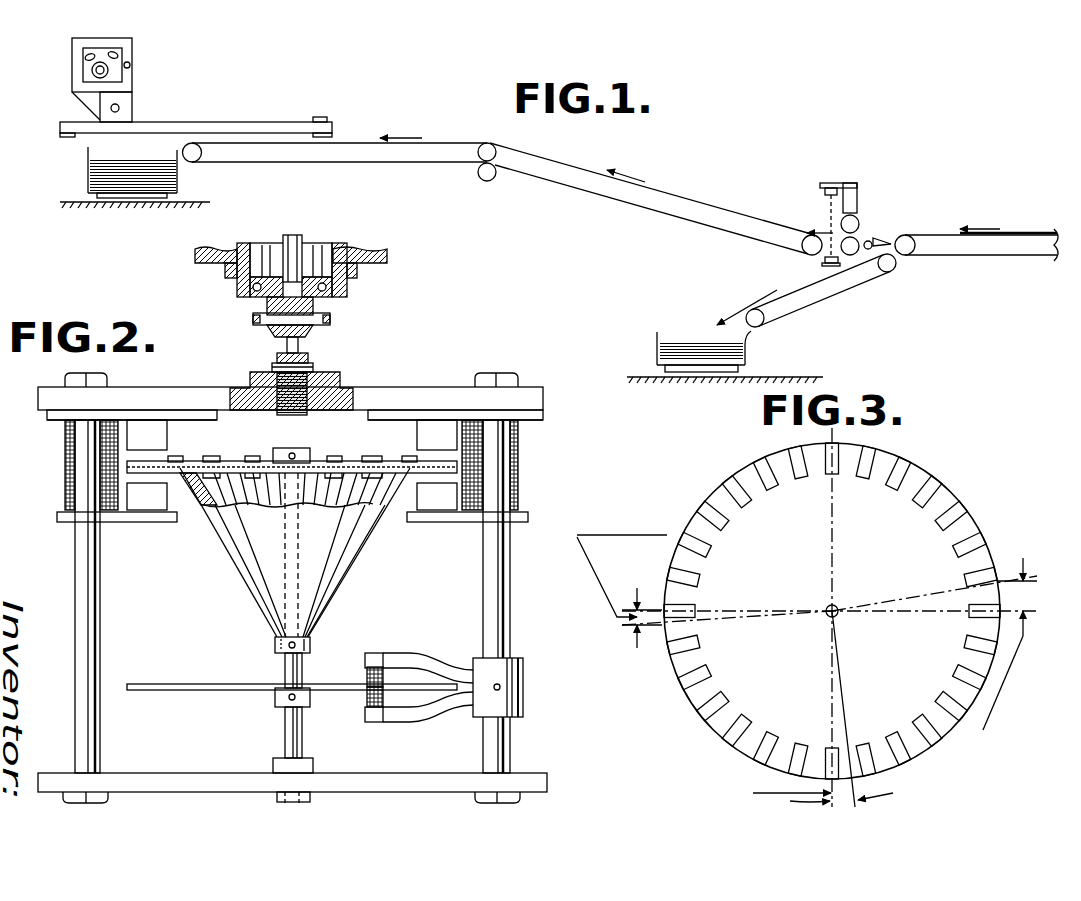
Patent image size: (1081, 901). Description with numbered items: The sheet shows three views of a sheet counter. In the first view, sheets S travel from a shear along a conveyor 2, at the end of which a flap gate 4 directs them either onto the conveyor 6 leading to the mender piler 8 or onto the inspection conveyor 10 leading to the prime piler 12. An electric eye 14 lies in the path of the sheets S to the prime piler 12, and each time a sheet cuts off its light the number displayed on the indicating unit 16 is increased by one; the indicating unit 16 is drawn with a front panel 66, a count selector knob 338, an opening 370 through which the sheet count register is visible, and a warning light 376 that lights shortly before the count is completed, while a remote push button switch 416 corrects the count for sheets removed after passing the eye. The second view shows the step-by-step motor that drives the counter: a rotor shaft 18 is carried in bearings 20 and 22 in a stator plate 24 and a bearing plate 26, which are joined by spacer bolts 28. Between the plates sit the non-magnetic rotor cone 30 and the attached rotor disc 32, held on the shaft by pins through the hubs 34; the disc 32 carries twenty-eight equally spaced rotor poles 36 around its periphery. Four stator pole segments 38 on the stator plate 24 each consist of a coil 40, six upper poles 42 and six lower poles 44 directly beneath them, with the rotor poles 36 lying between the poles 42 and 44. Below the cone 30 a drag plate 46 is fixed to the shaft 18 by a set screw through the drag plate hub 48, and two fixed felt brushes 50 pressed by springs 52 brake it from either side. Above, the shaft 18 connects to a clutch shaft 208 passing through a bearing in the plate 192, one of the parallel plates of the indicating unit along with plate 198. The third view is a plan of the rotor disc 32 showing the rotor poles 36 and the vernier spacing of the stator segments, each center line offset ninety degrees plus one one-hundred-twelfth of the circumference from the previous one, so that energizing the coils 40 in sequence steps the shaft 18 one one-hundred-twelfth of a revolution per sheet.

In FIG. 1, the conveyor 2 is at (1006, 257).
In FIG. 1, the flap gate 4 is at (880, 238).
In FIG. 1, the conveyor 6 is at (820, 290).
In FIG. 1, the mender piler 8 is at (738, 350).
In FIG. 1, the inspection conveyor 10 is at (683, 215).
In FIG. 1, the prime piler 12 is at (105, 176).
In FIG. 1, the electric eye 14 is at (822, 186).
In FIG. 1, the indicating unit 16 is at (68, 47).
In FIG. 2, the indicating unit 16 is at (193, 258).
In FIG. 2, the rotor shaft 18 is at (287, 345).
In FIG. 2, the bearing 20 is at (317, 388).
In FIG. 2, the bearing 22 is at (275, 760).
In FIG. 2, the stator plate 24 is at (380, 388).
In FIG. 2, the bearing plate 26 is at (180, 778).
In FIG. 2, the spacer bolts 28 is at (100, 583).
In FIG. 2, the rotor cone 30 is at (248, 572).
In FIG. 2, the rotor disc 32 is at (233, 460).
In FIG. 3, the rotor disc 32 is at (967, 525).
In FIG. 2, the hubs 34 is at (335, 449).
In FIG. 2, the rotor poles 36 is at (127, 472).
In FIG. 3, the rotor poles 36 is at (798, 480).
In FIG. 2, the stator pole segments 38 is at (55, 417).
In FIG. 2, the coil 40 is at (65, 493).
In FIG. 2, the upper poles 42 is at (158, 435).
In FIG. 2, the lower poles 44 is at (147, 502).
In FIG. 2, the drag plate 46 is at (190, 680).
In FIG. 2, the drag plate hub 48 is at (280, 703).
In FIG. 2, the felt brushes 50 is at (367, 675).
In FIG. 2, the springs 52 is at (425, 655).
In FIG. 1, the panel 66 is at (85, 58).
In FIG. 2, the plate 192 is at (388, 255).
In FIG. 1, the plate 198 is at (83, 75).
In FIG. 2, the clutch shaft 208 is at (302, 241).
In FIG. 1, the count selector knob 338 is at (130, 65).
In FIG. 1, the opening 370 is at (118, 53).
In FIG. 1, the light 376 is at (119, 108).
In FIG. 1, the push button switch 416 is at (320, 117).
In FIG. 1, the sheets S is at (1005, 232).